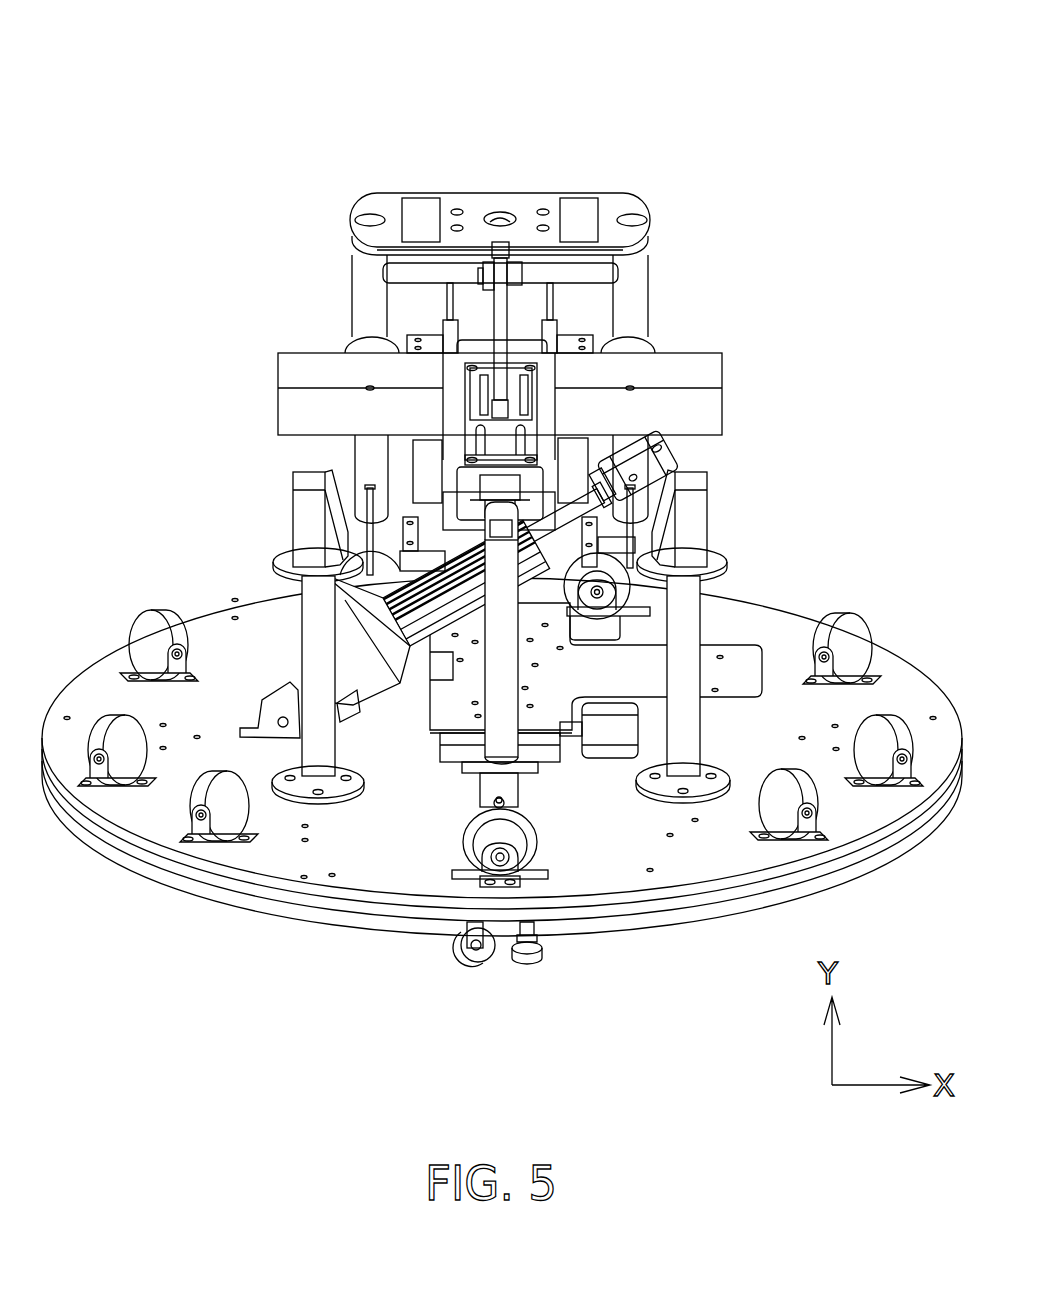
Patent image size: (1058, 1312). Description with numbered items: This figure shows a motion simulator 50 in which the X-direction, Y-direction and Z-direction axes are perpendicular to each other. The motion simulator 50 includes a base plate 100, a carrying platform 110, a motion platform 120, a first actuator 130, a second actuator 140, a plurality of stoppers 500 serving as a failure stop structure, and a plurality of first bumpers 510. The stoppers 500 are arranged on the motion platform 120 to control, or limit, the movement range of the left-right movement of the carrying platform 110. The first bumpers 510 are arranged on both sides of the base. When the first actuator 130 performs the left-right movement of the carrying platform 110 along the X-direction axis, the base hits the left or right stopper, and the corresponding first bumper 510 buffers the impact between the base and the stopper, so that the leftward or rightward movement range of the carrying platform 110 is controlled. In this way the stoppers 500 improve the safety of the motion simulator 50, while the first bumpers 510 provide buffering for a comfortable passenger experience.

The motion simulator 50 is at (230, 112).
The carrying platform 110 is at (500, 205).
The stoppers 500 is at (313, 508).
The first bumpers 510 is at (427, 462).
The first actuator 130 is at (427, 617).
The second actuator 140 is at (538, 437).
The base plate 100 is at (177, 875).
The motion platform 120 is at (278, 847).